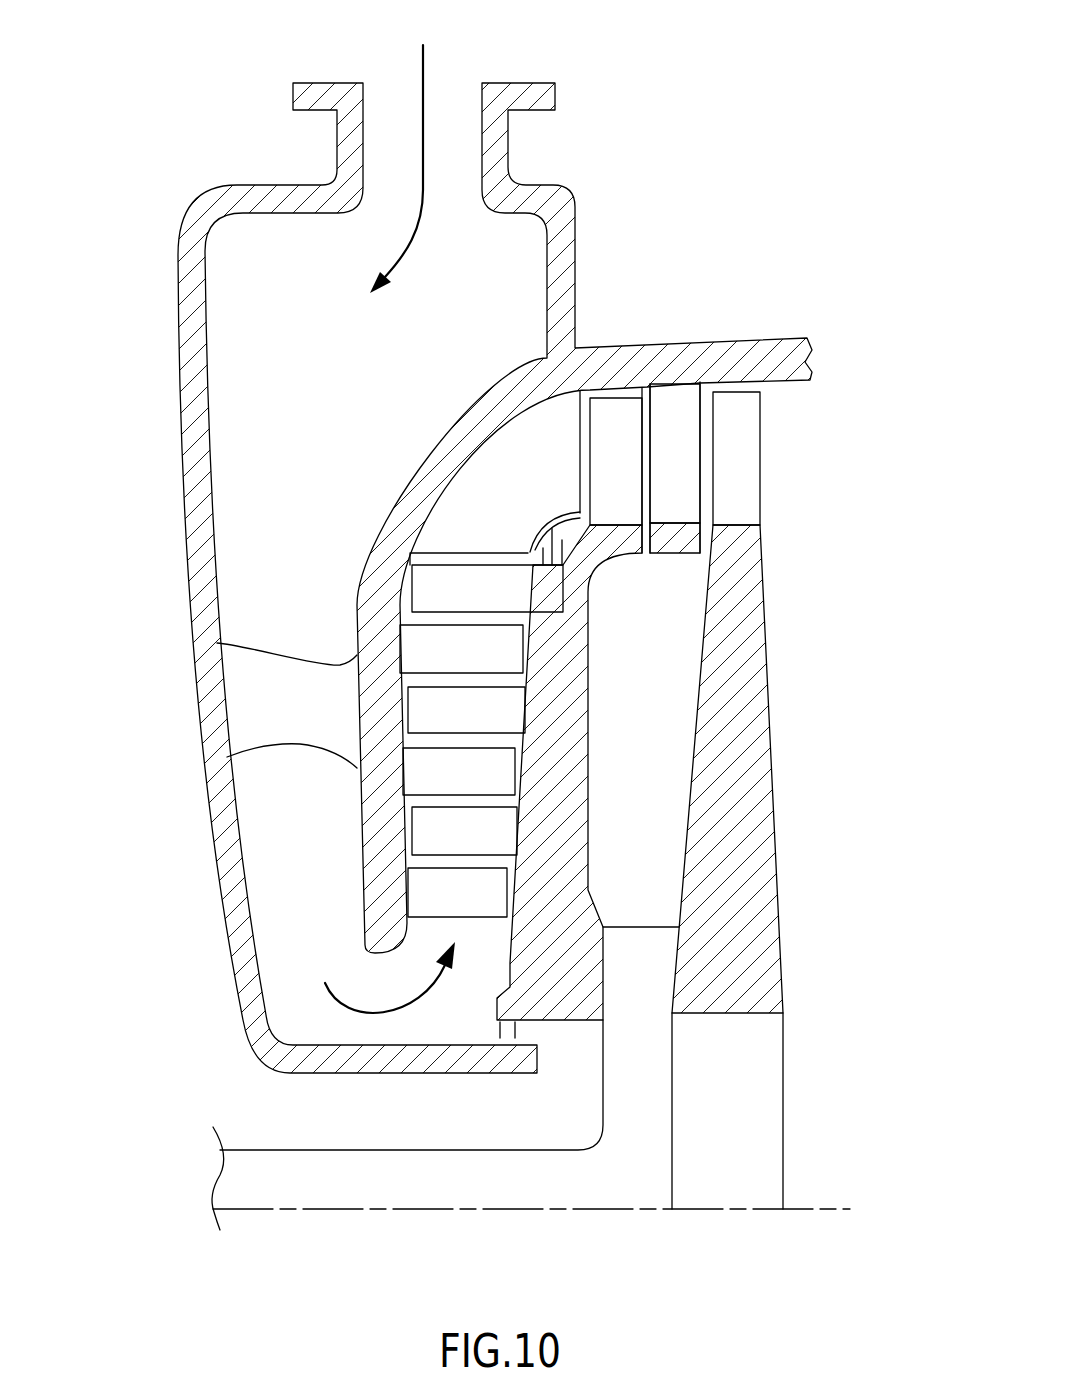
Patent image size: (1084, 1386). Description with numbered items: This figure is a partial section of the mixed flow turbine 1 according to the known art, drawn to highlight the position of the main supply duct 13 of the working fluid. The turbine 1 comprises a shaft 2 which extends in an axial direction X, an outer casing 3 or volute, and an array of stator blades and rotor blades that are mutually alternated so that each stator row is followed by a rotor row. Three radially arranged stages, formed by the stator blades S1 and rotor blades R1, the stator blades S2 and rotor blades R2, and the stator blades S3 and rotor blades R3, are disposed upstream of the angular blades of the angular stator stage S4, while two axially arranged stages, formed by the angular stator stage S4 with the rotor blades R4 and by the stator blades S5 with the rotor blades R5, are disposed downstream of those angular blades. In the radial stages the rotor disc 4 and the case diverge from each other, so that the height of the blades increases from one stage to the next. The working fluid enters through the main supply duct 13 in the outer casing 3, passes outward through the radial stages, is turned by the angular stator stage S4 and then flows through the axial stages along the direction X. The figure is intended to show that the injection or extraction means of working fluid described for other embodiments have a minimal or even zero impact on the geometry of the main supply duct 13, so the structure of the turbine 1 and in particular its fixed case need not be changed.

The mixed flow turbine 1 is at (862, 38).
The shaft 2 is at (267, 1177).
The outer casing 3 is at (427, 457).
The rotor disc 4 is at (562, 737).
The main supply duct 13 is at (298, 317).
The axial direction X is at (817, 1209).
The rotor blades of the first stage R1 is at (445, 845).
The rotor blades of the second stage R2 is at (446, 725).
The rotor blades of the third stage R3 is at (455, 603).
The rotor blades of the fourth stage R4 is at (598, 480).
The rotor blades of the fifth stage R5 is at (753, 478).
The stator blades of the first stage S1 is at (438, 908).
The stator blades of the second stage S2 is at (443, 788).
The stator blades of the third stage S3 is at (441, 664).
The angular stator stage S4 is at (522, 507).
The stator blades of the fifth stage S5 is at (690, 477).